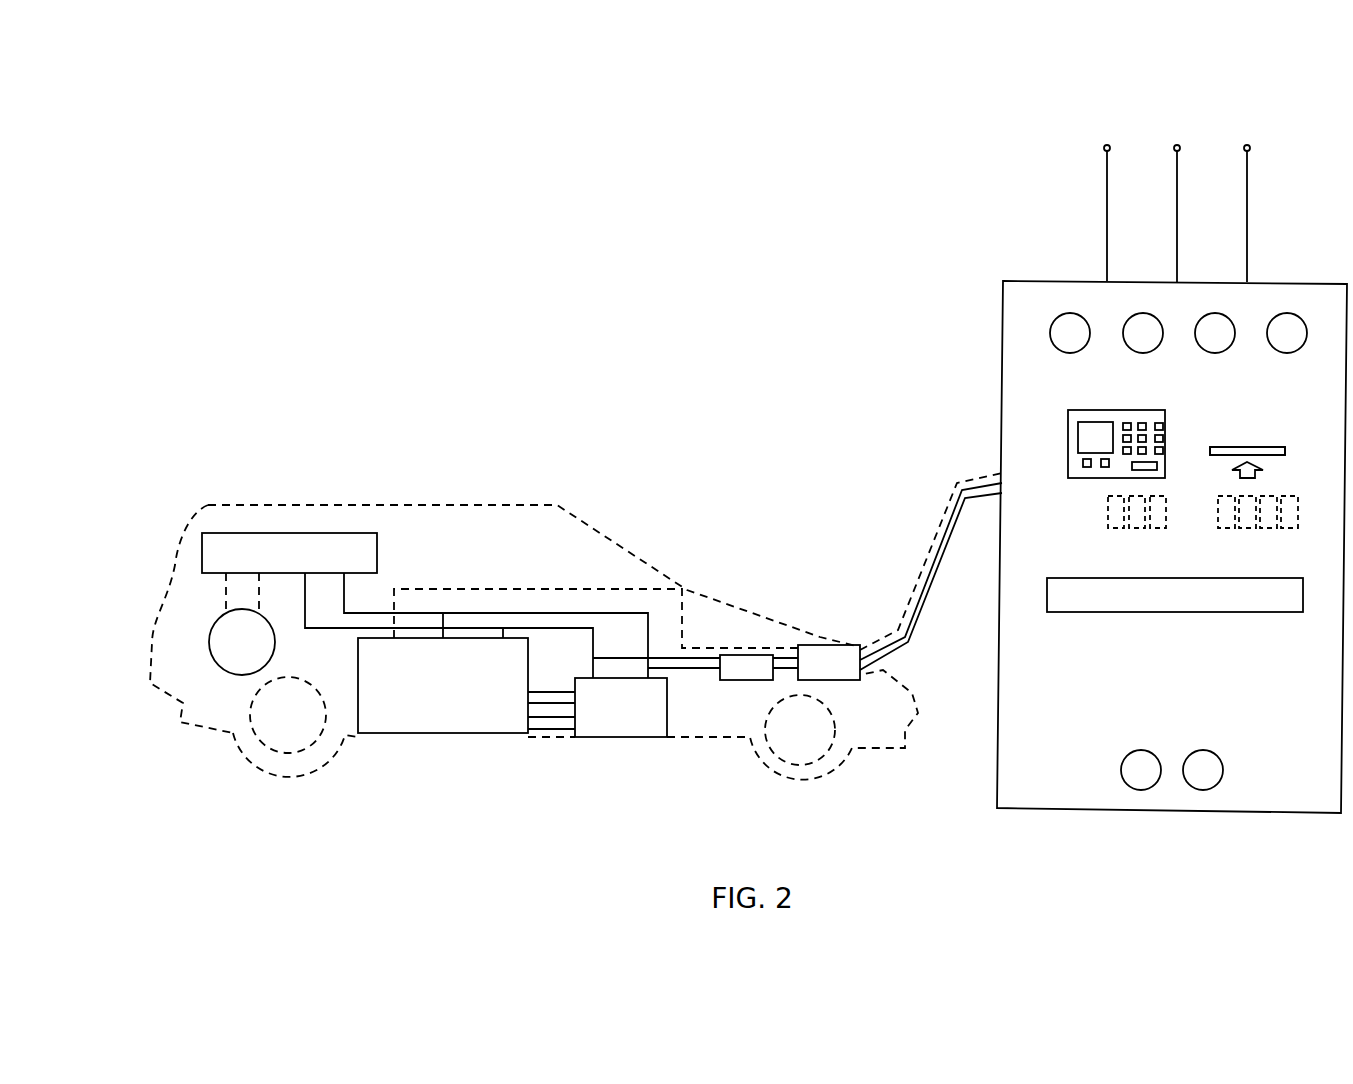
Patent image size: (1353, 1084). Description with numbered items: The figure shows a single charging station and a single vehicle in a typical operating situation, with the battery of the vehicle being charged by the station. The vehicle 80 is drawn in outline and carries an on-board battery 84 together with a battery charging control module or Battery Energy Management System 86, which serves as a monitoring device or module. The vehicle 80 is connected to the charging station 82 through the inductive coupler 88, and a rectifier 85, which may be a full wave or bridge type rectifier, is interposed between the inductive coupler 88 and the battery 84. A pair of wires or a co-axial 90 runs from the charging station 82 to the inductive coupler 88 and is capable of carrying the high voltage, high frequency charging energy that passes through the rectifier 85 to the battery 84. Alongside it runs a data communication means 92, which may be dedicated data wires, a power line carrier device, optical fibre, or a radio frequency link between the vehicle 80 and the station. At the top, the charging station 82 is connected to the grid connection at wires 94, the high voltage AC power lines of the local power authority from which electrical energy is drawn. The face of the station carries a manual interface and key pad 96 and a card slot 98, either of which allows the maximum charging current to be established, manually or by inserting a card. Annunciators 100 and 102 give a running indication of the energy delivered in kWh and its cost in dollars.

The vehicle 80 is at (475, 542).
The charging station 82 is at (1025, 365).
The battery 84 is at (638, 730).
The rectifier 85 is at (760, 672).
The battery charging control module or Battery Energy Management System 86 is at (502, 725).
The inductive coupler 88 is at (845, 655).
The pair of wires or co-axial 90 is at (900, 652).
The data communication means 92 is at (958, 485).
The grid connection wires 94 is at (1247, 192).
The manual interface and key pad 96 is at (1072, 448).
The card slot 98 is at (1285, 448).
The annunciator 100 is at (1138, 523).
The annunciator 102 is at (1250, 518).